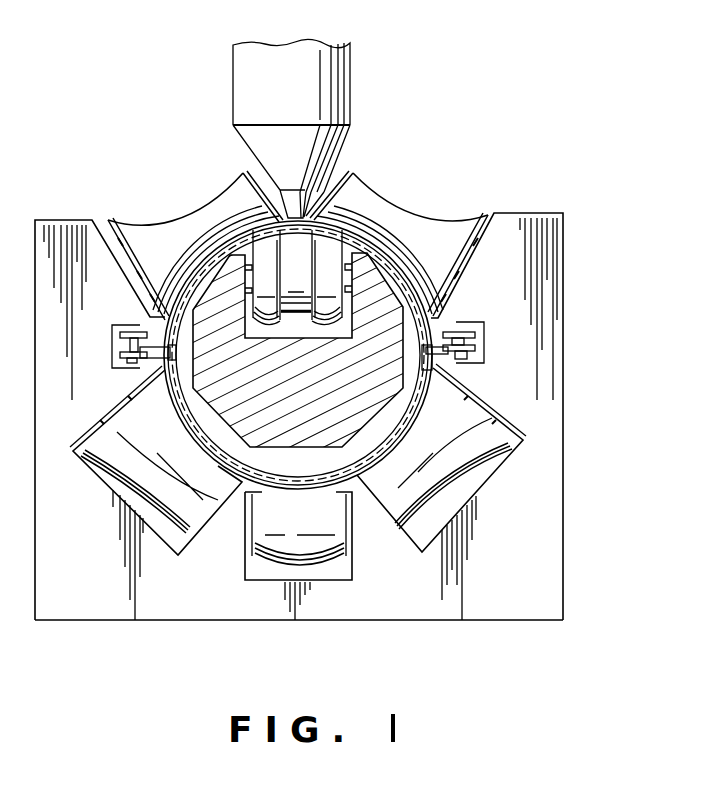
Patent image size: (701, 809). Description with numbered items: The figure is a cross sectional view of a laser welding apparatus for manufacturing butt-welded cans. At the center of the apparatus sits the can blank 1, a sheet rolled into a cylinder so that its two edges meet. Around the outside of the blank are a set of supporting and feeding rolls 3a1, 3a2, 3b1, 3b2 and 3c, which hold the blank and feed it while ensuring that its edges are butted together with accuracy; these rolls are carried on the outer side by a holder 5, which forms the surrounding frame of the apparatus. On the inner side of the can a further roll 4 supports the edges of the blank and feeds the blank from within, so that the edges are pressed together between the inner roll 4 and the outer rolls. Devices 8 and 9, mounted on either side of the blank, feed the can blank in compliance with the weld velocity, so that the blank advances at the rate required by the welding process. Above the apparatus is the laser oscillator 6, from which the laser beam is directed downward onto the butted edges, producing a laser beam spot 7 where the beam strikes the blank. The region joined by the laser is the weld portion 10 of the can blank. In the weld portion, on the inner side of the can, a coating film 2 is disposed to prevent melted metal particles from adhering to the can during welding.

The can blank 1 is at (393, 450).
The coating film 2 is at (291, 233).
The supporting and feeding roll 3a1 is at (423, 220).
The supporting and feeding roll 3a2 is at (174, 226).
The supporting and feeding roll 3b1 is at (483, 457).
The supporting and feeding roll 3b2 is at (133, 468).
The supporting and feeding roll 3c is at (260, 543).
The roll 4 is at (338, 256).
The holder 5 is at (565, 362).
The laser oscillator 6 is at (350, 72).
The laser beam spot 7 is at (326, 192).
The feeding device 8 is at (142, 371).
The feeding device 9 is at (113, 343).
The weld portion 10 is at (296, 285).